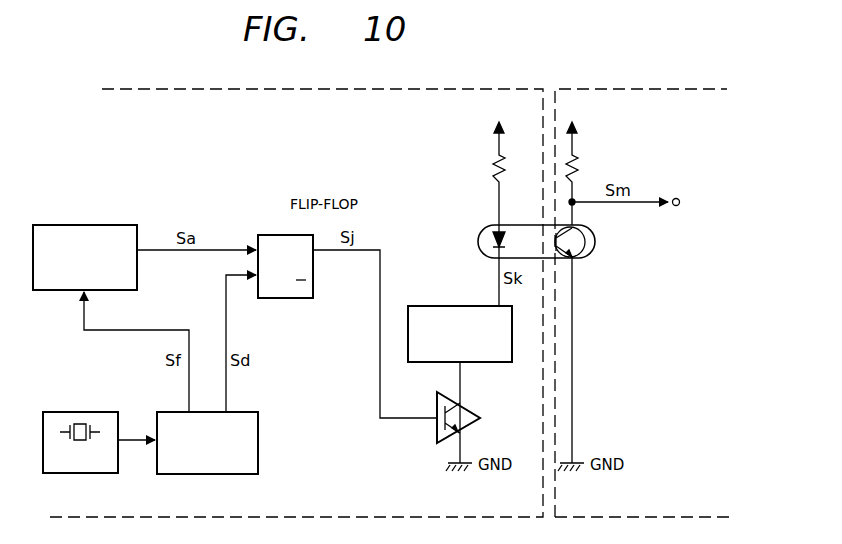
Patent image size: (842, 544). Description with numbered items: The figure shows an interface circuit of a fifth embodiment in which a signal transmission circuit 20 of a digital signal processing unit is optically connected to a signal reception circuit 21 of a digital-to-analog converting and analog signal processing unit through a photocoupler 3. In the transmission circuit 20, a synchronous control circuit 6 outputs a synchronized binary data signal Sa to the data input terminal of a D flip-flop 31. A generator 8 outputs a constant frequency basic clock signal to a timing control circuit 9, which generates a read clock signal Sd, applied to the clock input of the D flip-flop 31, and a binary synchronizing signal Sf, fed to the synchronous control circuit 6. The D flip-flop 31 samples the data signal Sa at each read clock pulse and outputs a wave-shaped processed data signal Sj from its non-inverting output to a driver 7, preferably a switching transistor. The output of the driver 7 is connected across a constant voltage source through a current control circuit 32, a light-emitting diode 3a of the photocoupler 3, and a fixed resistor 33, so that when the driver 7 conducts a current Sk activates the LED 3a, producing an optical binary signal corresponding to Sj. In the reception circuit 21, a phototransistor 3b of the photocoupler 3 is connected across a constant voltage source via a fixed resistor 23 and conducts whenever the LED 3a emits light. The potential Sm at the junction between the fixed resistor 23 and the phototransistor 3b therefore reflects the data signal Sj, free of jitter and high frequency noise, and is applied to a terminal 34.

The photocoupler 3 is at (514, 225).
The light-emitting diode 3a is at (492, 240).
The phototransistor 3b is at (596, 244).
The synchronous control circuit 6 is at (115, 225).
The driver 7 is at (467, 412).
The generator 8 is at (100, 412).
The timing control circuit 9 is at (248, 412).
The signal transmission circuit 20 is at (490, 89).
The signal reception circuit 21 is at (680, 89).
The fixed resistor 23 is at (576, 170).
The D flip-flop 31 is at (260, 235).
The current control circuit 32 is at (452, 306).
The fixed resistor 33 is at (495, 170).
The terminal 34 is at (678, 198).